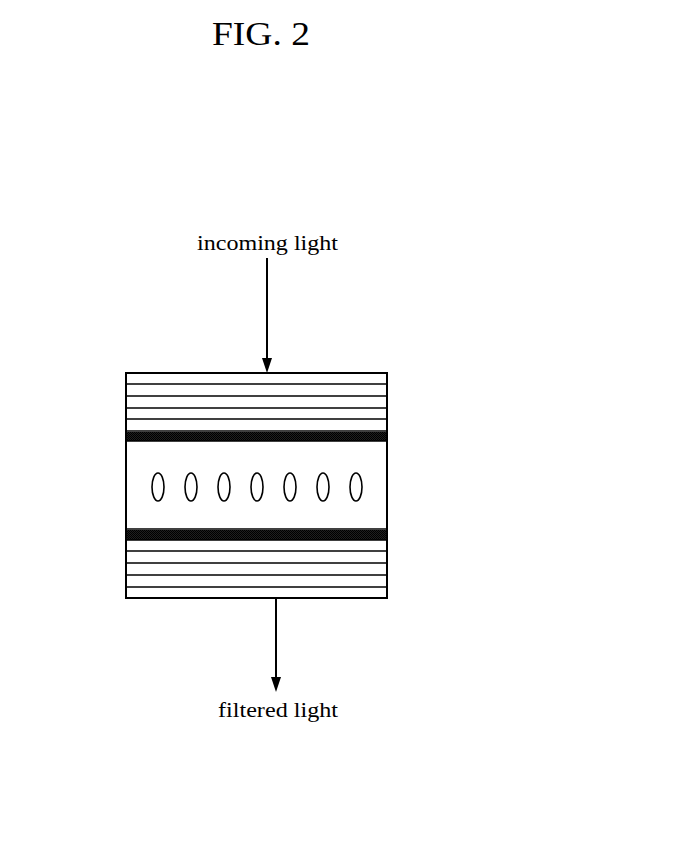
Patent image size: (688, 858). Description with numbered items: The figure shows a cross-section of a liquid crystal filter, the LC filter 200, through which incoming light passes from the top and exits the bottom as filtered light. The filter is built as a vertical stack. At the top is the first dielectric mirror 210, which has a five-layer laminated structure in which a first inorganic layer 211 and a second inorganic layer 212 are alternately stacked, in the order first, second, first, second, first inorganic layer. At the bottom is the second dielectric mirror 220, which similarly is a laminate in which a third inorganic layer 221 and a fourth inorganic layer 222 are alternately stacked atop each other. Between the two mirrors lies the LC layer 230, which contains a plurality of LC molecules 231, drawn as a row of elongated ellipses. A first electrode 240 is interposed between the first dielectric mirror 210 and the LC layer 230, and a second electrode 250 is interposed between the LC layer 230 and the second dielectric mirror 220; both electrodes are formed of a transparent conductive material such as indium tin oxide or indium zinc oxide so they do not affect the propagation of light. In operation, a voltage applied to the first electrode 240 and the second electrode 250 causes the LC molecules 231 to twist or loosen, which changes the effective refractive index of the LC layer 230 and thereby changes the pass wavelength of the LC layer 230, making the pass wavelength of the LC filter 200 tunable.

The LC filter 200 is at (414, 304).
The first dielectric mirror 210 is at (392, 372).
The first inorganic layer 211 is at (142, 380).
The second inorganic layer 212 is at (187, 392).
The second dielectric mirror 220 is at (392, 540).
The third inorganic layer 221 is at (165, 545).
The fourth inorganic layer 222 is at (205, 558).
The LC layer 230 is at (392, 443).
The LC molecules 231 is at (152, 487).
The first electrode 240 is at (130, 436).
The second electrode 250 is at (130, 534).